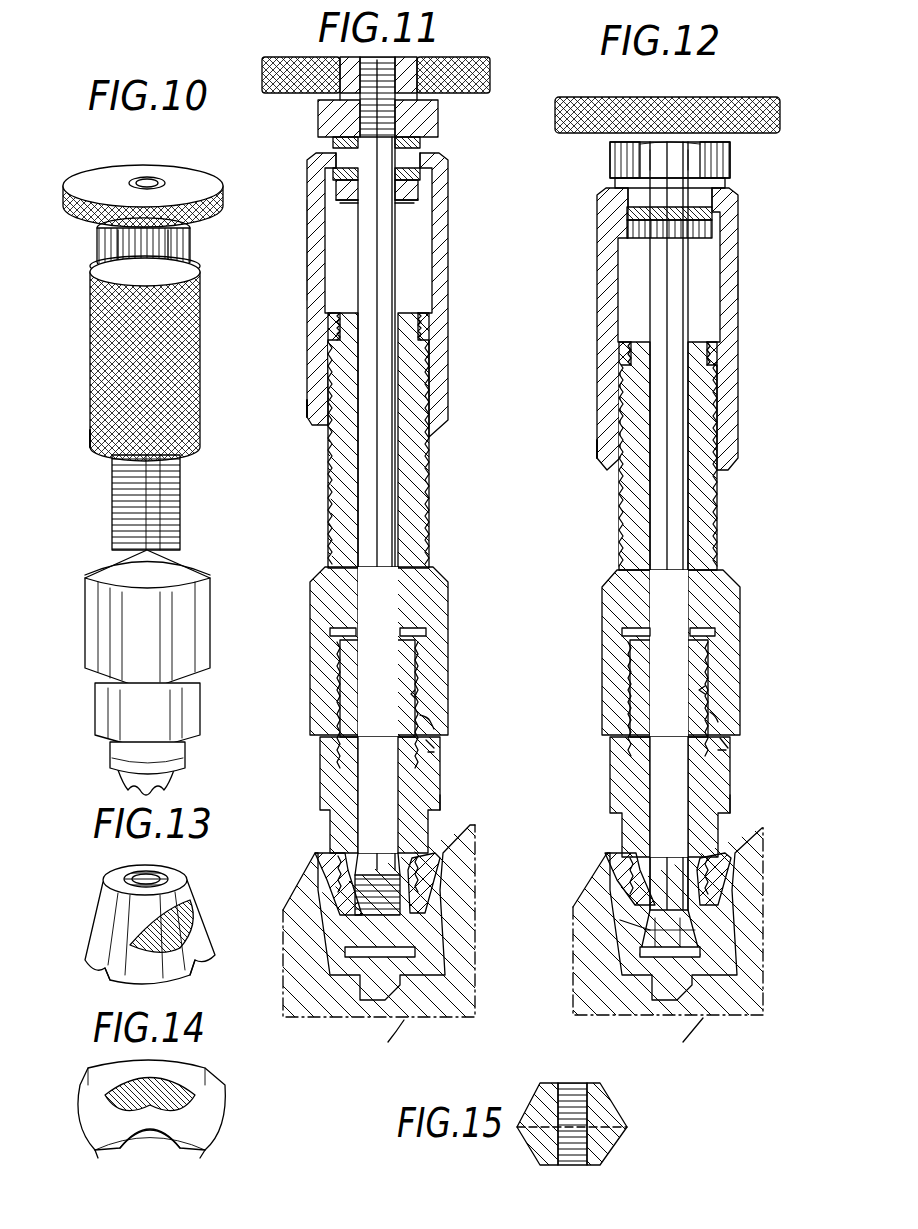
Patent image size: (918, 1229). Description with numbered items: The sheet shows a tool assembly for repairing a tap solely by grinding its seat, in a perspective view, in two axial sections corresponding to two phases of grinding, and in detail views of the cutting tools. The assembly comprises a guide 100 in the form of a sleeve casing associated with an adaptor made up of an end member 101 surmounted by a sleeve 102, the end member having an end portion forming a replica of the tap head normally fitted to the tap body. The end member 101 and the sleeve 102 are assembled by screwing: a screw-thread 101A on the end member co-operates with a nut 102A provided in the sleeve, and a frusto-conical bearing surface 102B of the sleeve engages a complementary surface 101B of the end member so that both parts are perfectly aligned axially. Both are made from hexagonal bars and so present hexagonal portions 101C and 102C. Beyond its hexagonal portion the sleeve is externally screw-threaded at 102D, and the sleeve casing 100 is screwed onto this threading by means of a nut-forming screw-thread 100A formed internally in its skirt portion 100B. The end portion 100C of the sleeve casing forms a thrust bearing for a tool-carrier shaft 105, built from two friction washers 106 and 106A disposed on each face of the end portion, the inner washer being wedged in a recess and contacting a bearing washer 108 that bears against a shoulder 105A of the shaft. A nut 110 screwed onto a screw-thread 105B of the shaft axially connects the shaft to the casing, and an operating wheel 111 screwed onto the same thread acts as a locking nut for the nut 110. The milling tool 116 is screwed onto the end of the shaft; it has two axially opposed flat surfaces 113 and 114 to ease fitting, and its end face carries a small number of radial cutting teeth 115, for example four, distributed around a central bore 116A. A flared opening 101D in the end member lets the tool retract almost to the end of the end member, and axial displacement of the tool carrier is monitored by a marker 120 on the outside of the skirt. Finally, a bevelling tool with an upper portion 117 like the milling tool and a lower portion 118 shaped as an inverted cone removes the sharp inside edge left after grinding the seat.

In FIG. 10, the guide 100 is at (140, 359).
In FIG. 11, the guide 100 is at (395, 302).
In FIG. 12, the guide 100 is at (680, 325).
In FIG. 11, the nut-forming screw-thread 100A is at (430, 324).
In FIG. 12, the nut-forming screw-thread 100A is at (708, 350).
In FIG. 10, the skirt portion 100B is at (90, 321).
In FIG. 11, the skirt portion 100B is at (438, 260).
In FIG. 12, the skirt portion 100B is at (735, 245).
In FIG. 11, the end portion 100C is at (428, 160).
In FIG. 12, the end portion 100C is at (700, 195).
In FIG. 10, the end member 101 is at (145, 728).
In FIG. 11, the end member 101 is at (425, 786).
In FIG. 12, the end member 101 is at (711, 787).
In FIG. 11, the screw-thread 101A is at (418, 692).
In FIG. 12, the screw-thread 101A is at (706, 686).
In FIG. 11, the complementary surface 101B is at (432, 745).
In FIG. 12, the complementary surface 101B is at (724, 748).
In FIG. 10, the hexagonal portion 101C is at (95, 716).
In FIG. 11, the hexagonal portion 101C is at (440, 803).
In FIG. 12, the hexagonal portion 101C is at (722, 802).
In FIG. 10, the flared opening 101D is at (112, 766).
In FIG. 11, the flared opening 101D is at (430, 871).
In FIG. 12, the flared opening 101D is at (704, 871).
In FIG. 10, the sleeve 102 is at (139, 572).
In FIG. 11, the sleeve 102 is at (416, 583).
In FIG. 12, the sleeve 102 is at (701, 599).
In FIG. 11, the nut 102A is at (420, 660).
In FIG. 12, the nut 102A is at (710, 655).
In FIG. 11, the frusto-conical bearing surface 102B is at (430, 717).
In FIG. 12, the frusto-conical bearing surface 102B is at (712, 710).
In FIG. 10, the hexagonal portion 102C is at (84, 574).
In FIG. 11, the hexagonal portion 102C is at (442, 621).
In FIG. 12, the hexagonal portion 102C is at (728, 623).
In FIG. 10, the external screw-threading 102D is at (120, 500).
In FIG. 11, the external screw-threading 102D is at (428, 521).
In FIG. 12, the external screw-threading 102D is at (720, 520).
In FIG. 11, the tool-carrier shaft 105 is at (427, 463).
In FIG. 12, the tool-carrier shaft 105 is at (684, 276).
In FIG. 11, the shoulder 105A is at (420, 195).
In FIG. 10, the screw-thread 105B is at (150, 182).
In FIG. 11, the screw-thread 105B is at (438, 106).
In FIG. 10, the friction washer 106 is at (90, 267).
In FIG. 11, the friction washer 106 is at (333, 147).
In FIG. 12, the friction washer 106 is at (618, 183).
In FIG. 11, the friction washer 106A is at (335, 174).
In FIG. 12, the friction washer 106A is at (627, 214).
In FIG. 11, the bearing washer 108 is at (337, 202).
In FIG. 12, the bearing washer 108 is at (627, 238).
In FIG. 10, the nut 110 is at (97, 245).
In FIG. 11, the nut 110 is at (318, 111).
In FIG. 12, the nut 110 is at (612, 154).
In FIG. 10, the operating wheel 111 is at (96, 180).
In FIG. 11, the operating wheel 111 is at (263, 76).
In FIG. 12, the operating wheel 111 is at (582, 97).
In FIG. 11, the flat surface 113 is at (379, 941).
In FIG. 12, the flat surface 113 is at (668, 942).
In FIG. 13, the flat surface 113 is at (141, 862).
In FIG. 13, the flat surface 114 is at (182, 924).
In FIG. 13, the cutting teeth 115 is at (108, 972).
In FIG. 14, the cutting teeth 115 is at (100, 1146).
In FIG. 11, the milling tool 116 is at (353, 898).
In FIG. 12, the milling tool 116 is at (616, 906).
In FIG. 13, the milling tool 116 is at (124, 921).
In FIG. 14, the milling tool 116 is at (163, 1122).
In FIG. 11, the central bore 116A is at (374, 898).
In FIG. 13, the central bore 116A is at (126, 877).
In FIG. 14, the central bore 116A is at (148, 1140).
In FIG. 15, the upper portion 117 is at (602, 1114).
In FIG. 15, the lower portion 118 is at (620, 1146).
In FIG. 10, the marker 120 is at (90, 431).
In FIG. 11, the marker 120 is at (308, 418).
In FIG. 12, the marker 120 is at (596, 444).